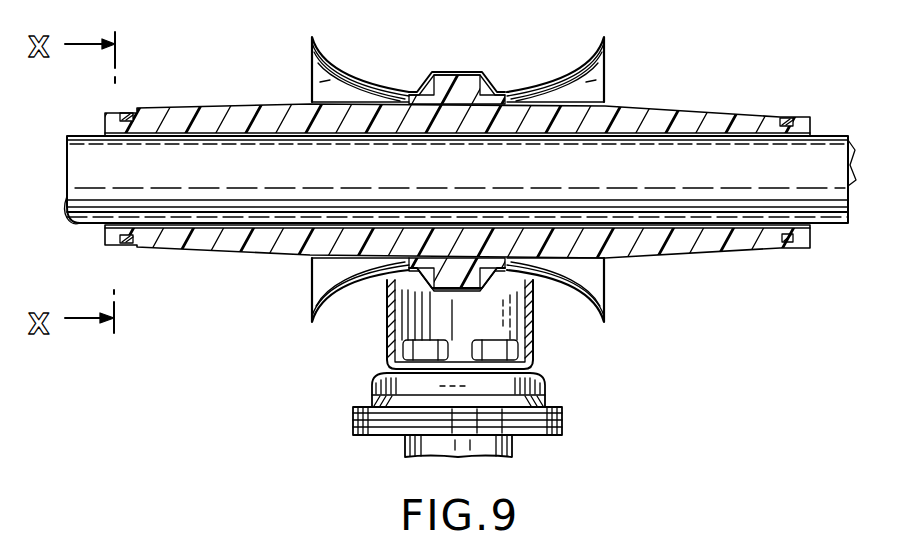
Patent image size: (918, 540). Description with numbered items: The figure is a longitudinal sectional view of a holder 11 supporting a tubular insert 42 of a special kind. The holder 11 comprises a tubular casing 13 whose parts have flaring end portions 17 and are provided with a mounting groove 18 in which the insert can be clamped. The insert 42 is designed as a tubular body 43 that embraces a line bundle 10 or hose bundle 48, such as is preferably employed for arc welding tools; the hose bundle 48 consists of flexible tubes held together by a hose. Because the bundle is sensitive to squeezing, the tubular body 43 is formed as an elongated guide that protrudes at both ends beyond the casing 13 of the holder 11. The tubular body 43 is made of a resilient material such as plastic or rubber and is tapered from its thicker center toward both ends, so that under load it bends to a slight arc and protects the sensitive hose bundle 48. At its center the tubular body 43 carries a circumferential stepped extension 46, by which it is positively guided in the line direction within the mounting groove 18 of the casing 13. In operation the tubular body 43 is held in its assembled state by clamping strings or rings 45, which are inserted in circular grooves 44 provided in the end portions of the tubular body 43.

The line bundle 10 is at (157, 157).
The hose bundle 48 is at (461, 137).
The insert 42 is at (459, 167).
The tubular body 43 is at (677, 117).
The clamping strings, rings 45 is at (785, 118).
The circular grooves 44 is at (785, 243).
The holder 11 is at (459, 177).
The flaring end portions 17 is at (568, 77).
The mounting groove 18 is at (436, 72).
The circumferential stepped extension 46 is at (463, 83).
The tubular casing 13 is at (572, 307).